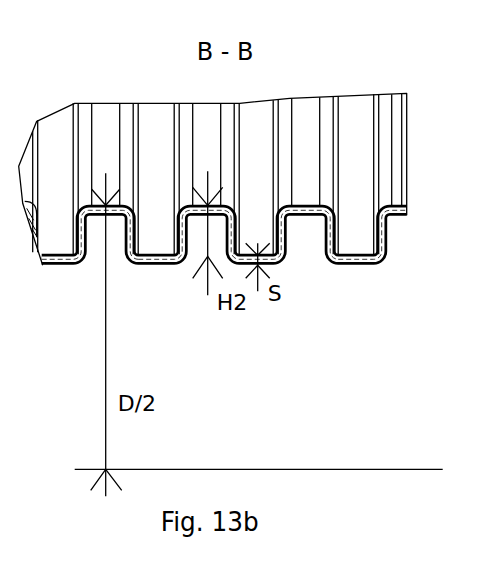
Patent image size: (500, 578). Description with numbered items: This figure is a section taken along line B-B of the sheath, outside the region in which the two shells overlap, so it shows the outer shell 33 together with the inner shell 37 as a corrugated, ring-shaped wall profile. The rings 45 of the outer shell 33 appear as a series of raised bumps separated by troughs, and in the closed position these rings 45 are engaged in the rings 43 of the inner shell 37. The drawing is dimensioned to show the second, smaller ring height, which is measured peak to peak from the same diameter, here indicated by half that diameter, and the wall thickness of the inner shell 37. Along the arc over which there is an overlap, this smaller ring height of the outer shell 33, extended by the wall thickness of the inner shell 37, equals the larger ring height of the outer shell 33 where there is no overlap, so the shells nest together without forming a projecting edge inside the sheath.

The outer shell 33 is at (100, 127).
The inner shell 37 is at (57, 266).
The rings of the outer shell 45 is at (160, 263).
The rings of the inner shell 43 is at (375, 268).